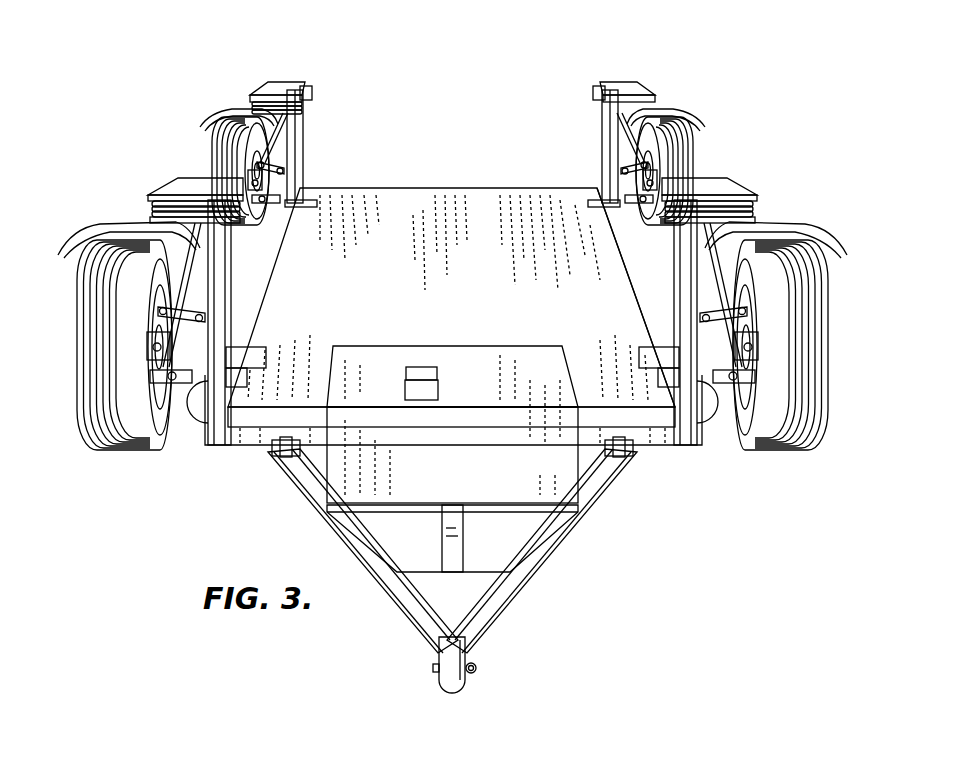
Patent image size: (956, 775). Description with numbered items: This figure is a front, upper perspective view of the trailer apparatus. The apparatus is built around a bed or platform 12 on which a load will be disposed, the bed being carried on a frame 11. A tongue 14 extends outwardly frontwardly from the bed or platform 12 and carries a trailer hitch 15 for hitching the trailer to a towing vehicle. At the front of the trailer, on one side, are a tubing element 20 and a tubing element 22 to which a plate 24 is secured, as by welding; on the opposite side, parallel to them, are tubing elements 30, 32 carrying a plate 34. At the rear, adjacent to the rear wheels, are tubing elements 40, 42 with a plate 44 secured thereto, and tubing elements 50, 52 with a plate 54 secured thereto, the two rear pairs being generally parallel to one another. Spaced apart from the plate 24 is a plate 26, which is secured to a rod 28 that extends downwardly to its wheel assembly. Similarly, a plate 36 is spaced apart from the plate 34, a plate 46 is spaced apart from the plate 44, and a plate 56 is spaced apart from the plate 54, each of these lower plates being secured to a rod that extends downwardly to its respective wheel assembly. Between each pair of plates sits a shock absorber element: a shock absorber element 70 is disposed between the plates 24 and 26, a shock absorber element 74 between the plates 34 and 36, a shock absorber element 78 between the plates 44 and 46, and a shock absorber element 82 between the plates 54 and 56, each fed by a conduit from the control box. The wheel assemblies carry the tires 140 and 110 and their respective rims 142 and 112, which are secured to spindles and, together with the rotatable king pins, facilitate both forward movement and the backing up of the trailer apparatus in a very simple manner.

The frame 11 is at (664, 452).
The bed or platform 12 is at (482, 193).
The tongue 14 is at (555, 545).
The hitch coupler 15 is at (465, 672).
The tubing element 20 is at (697, 410).
The tubing element 22 is at (663, 303).
The plate 24 is at (700, 180).
The plate 26 is at (760, 220).
The rod 28 is at (698, 292).
The tubing element 30 is at (210, 404).
The tubing element 32 is at (240, 302).
The plate 34 is at (200, 178).
The plate 36 is at (150, 218).
The tubing element 40 is at (607, 150).
The tubing element 42 is at (610, 125).
The plate 44 is at (640, 82).
The plate 46 is at (660, 112).
The tubing element 50 is at (298, 150).
The tubing element 52 is at (300, 125).
The plate 54 is at (275, 82).
The plate 56 is at (262, 105).
The shock absorber element 70 is at (755, 205).
The shock absorber element 74 is at (152, 205).
The shock absorber element 78 is at (600, 90).
The shock absorber element 82 is at (313, 92).
The tire 110 is at (826, 412).
The rim 112 is at (753, 320).
The tire 140 is at (128, 450).
The rim 142 is at (160, 310).